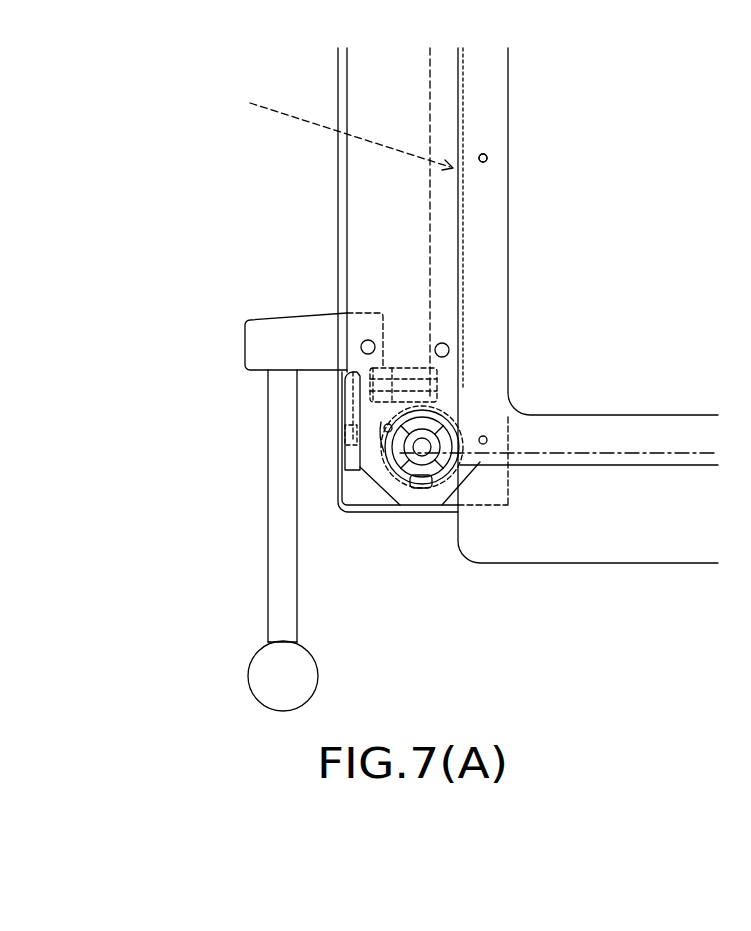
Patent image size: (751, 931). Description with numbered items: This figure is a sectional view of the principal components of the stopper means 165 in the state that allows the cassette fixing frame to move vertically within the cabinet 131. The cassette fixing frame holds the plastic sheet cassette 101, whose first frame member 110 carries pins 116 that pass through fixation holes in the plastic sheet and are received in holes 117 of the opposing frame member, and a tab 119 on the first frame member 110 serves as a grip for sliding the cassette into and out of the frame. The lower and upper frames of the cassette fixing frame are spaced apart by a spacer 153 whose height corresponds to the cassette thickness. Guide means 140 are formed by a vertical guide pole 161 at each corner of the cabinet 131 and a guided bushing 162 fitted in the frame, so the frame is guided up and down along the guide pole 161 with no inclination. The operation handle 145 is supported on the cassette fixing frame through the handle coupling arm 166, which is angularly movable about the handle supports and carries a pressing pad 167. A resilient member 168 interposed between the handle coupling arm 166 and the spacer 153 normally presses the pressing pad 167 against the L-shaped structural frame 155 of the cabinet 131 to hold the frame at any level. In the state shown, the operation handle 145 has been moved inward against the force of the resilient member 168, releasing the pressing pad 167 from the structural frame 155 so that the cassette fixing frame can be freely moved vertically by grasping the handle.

The plastic sheet cassette 101 is at (335, 130).
The first frame member 110 is at (573, 346).
The pins 116 is at (480, 157).
The holes 117 is at (483, 158).
The tab 119 is at (584, 513).
The cabinet 131 is at (339, 265).
The guide means 140 is at (435, 553).
The operation handle 145 is at (285, 525).
The spacer 153 is at (440, 225).
The structural frame 155 is at (340, 477).
The guide pole 161 is at (427, 457).
The guided bushing 162 is at (413, 488).
The stopper means 165 is at (424, 379).
The handle coupling arm 166 is at (262, 345).
The pressing pad 167 is at (355, 440).
The resilient member 168 is at (370, 383).